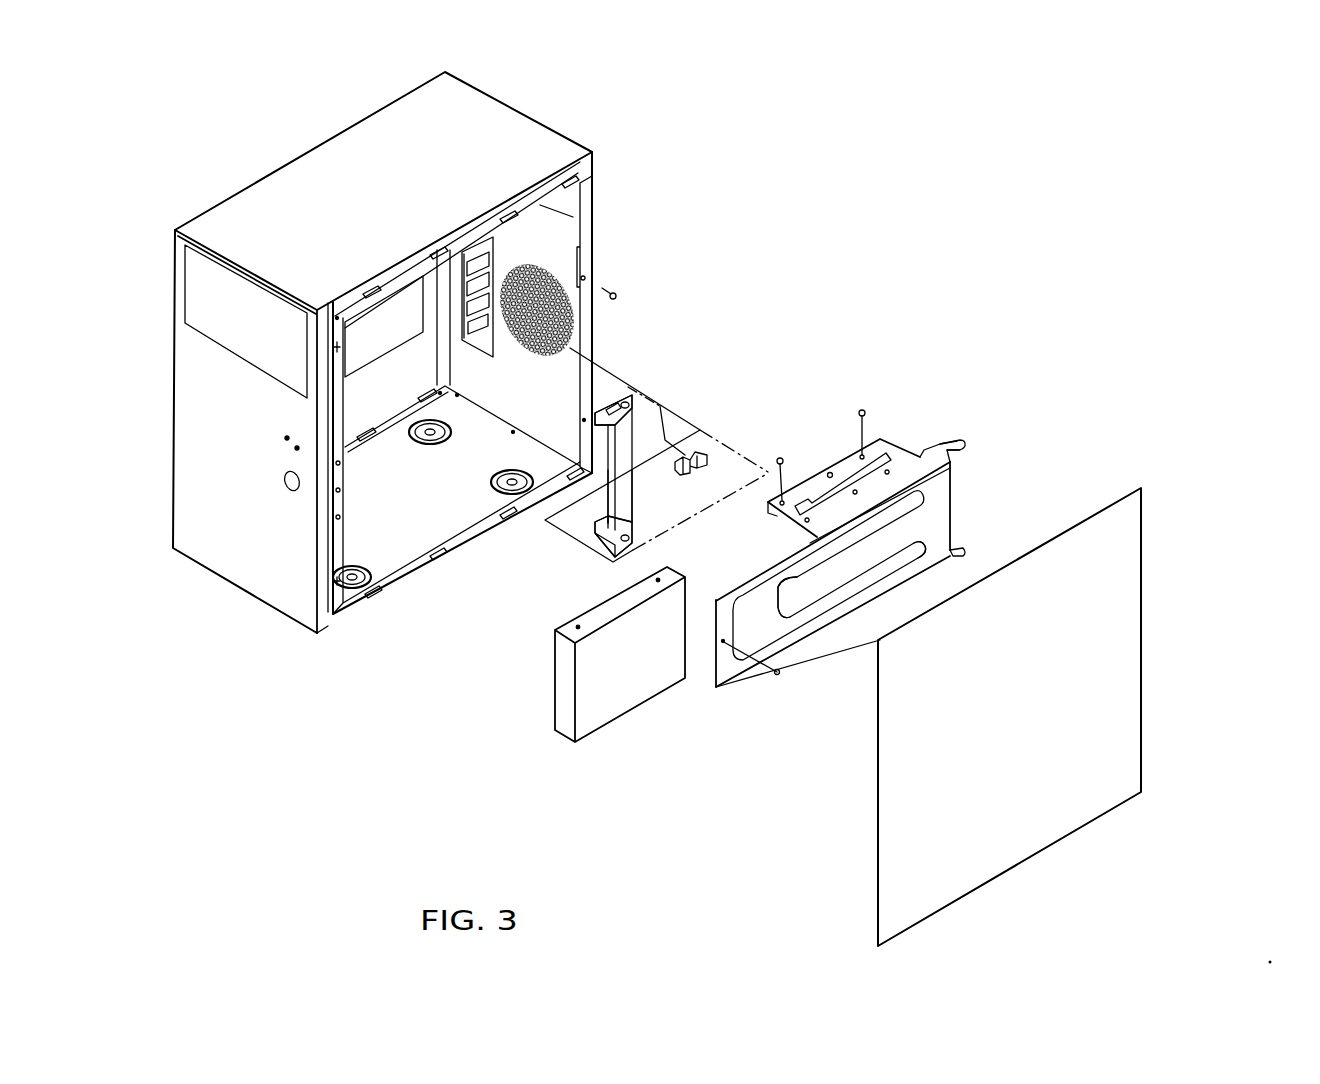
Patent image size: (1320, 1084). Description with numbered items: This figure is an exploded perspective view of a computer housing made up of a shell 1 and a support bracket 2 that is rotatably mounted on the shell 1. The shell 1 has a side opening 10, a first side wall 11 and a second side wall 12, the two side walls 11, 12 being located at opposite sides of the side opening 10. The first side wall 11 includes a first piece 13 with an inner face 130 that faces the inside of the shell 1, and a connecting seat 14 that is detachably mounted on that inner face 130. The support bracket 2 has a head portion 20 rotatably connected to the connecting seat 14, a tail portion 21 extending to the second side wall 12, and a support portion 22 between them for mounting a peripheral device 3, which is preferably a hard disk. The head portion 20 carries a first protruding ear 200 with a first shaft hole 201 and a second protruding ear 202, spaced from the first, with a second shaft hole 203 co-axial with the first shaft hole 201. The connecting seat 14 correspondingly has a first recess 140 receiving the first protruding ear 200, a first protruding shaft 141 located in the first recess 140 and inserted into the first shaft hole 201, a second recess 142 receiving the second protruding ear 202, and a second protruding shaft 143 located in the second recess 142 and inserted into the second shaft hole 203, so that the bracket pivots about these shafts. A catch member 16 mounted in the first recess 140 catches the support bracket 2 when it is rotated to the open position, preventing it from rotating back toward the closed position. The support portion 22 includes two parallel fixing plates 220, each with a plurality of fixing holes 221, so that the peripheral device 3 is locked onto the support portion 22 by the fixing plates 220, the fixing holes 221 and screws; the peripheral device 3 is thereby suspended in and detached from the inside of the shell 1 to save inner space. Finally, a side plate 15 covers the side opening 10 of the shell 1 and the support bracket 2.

The shell 1 is at (245, 170).
The side opening 10 is at (393, 540).
The first side wall 11 is at (595, 190).
The second side wall 12 is at (327, 637).
The first piece 13 is at (586, 220).
The inner face 130 is at (571, 250).
The connecting seat 14 is at (610, 502).
The first recess 140 is at (605, 407).
The first protruding shaft 141 is at (625, 417).
The second recess 142 is at (610, 528).
The second protruding shaft 143 is at (612, 525).
The catch member 16 is at (712, 452).
The support bracket 2 is at (827, 648).
The head portion 20 is at (963, 480).
The first protruding ear 200 is at (948, 440).
The first shaft hole 201 is at (958, 437).
The second protruding ear 202 is at (965, 552).
The second shaft hole 203 is at (955, 547).
The tail portion 21 is at (731, 680).
The support portion 22 is at (812, 482).
The fixing plates 220 is at (882, 440).
The fixing holes 221 is at (830, 475).
The peripheral device 3 is at (603, 707).
The side plate 15 is at (1130, 698).